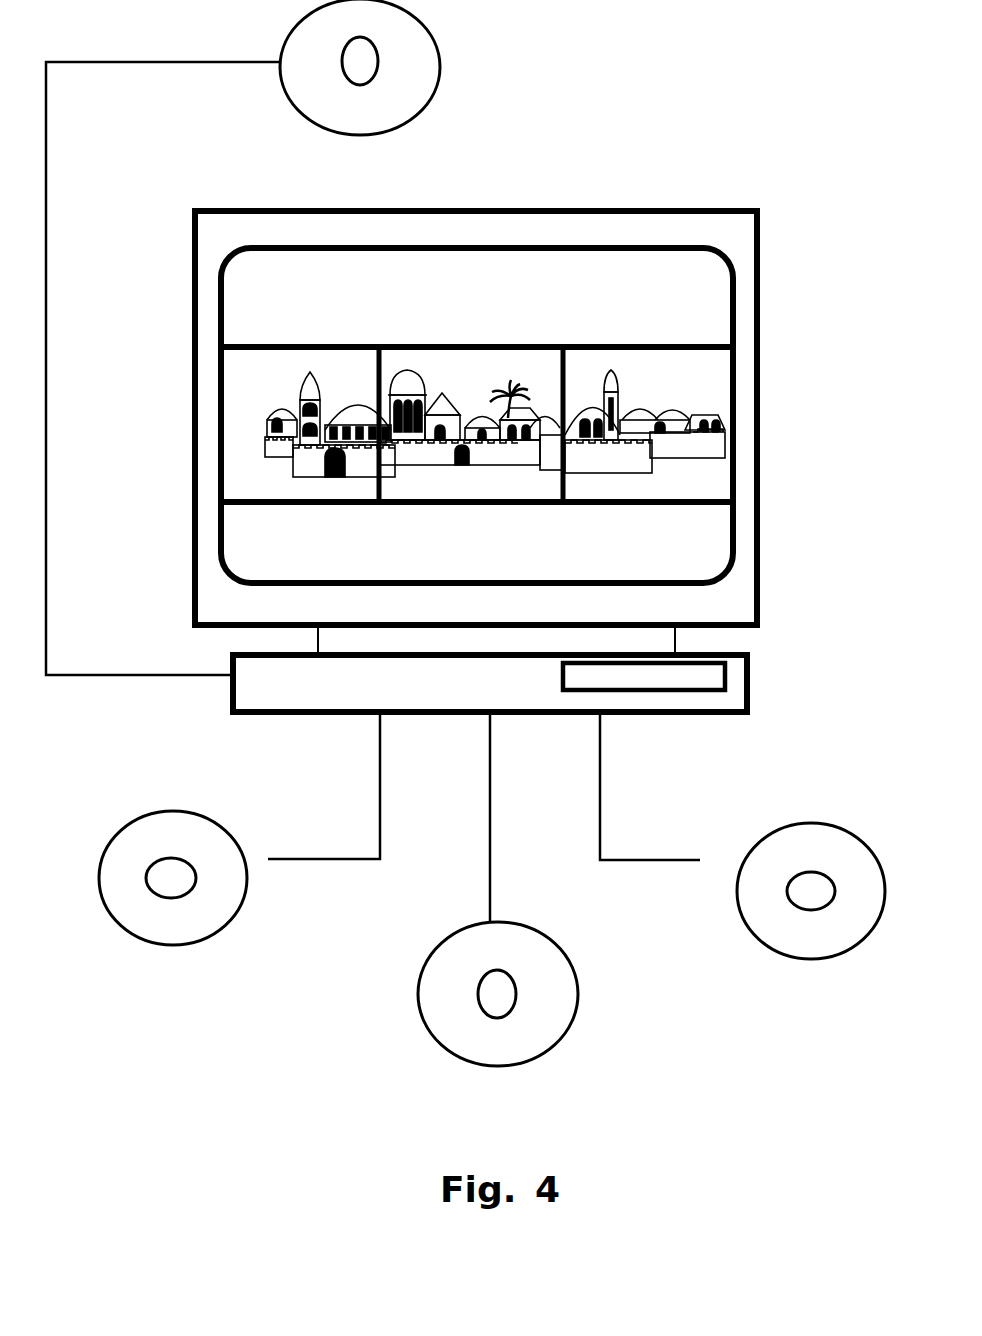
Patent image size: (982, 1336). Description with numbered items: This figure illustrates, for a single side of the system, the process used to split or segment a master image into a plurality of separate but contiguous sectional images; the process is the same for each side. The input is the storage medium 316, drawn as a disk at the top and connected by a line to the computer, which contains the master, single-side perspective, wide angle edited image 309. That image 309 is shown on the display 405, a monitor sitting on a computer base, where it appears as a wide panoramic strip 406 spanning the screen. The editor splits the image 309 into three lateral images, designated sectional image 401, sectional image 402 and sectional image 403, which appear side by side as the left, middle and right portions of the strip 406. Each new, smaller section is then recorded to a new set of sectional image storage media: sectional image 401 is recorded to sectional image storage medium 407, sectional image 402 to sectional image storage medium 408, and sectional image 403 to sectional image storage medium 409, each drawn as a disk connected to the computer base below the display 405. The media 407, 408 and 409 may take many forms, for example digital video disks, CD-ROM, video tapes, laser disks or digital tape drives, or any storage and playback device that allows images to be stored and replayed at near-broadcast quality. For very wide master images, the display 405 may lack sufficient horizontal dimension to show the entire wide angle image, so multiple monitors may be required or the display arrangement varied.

The storage medium 316 is at (276, 337).
The wide angle edited image 309 is at (475, 345).
The display 405 is at (195, 320).
The panoramic image strip 406 is at (220, 502).
The sectional image 401 is at (292, 478).
The sectional image 402 is at (465, 468).
The sectional image 403 is at (643, 473).
The sectional image storage medium 407 is at (171, 920).
The sectional image storage medium 408 is at (502, 1043).
The sectional image storage medium 409 is at (822, 933).